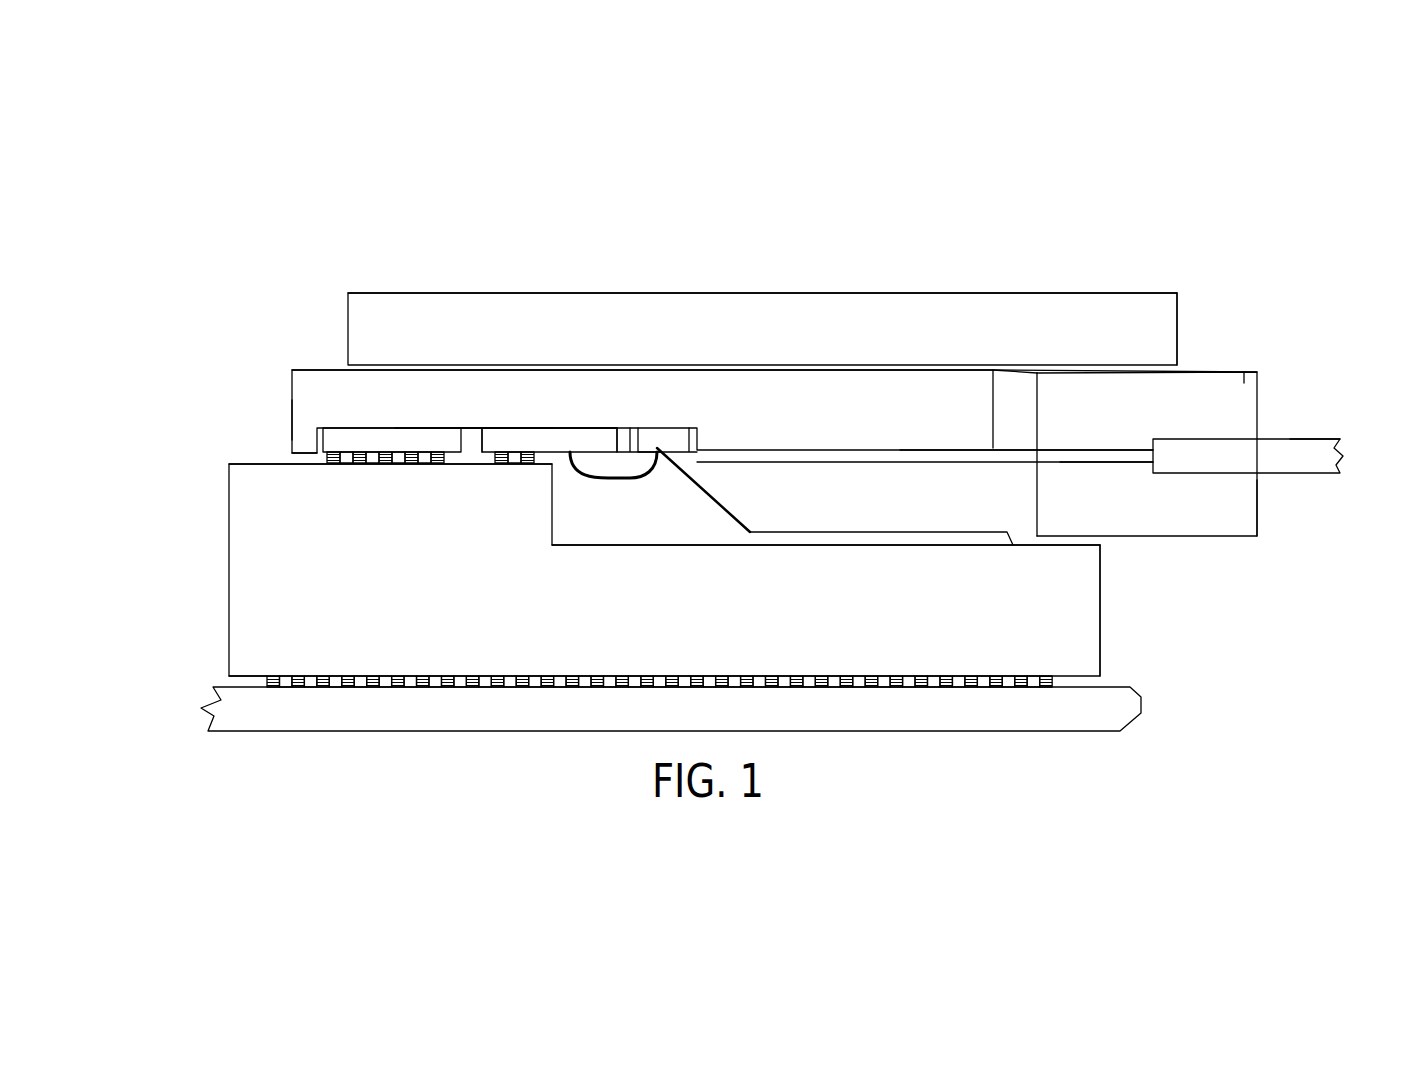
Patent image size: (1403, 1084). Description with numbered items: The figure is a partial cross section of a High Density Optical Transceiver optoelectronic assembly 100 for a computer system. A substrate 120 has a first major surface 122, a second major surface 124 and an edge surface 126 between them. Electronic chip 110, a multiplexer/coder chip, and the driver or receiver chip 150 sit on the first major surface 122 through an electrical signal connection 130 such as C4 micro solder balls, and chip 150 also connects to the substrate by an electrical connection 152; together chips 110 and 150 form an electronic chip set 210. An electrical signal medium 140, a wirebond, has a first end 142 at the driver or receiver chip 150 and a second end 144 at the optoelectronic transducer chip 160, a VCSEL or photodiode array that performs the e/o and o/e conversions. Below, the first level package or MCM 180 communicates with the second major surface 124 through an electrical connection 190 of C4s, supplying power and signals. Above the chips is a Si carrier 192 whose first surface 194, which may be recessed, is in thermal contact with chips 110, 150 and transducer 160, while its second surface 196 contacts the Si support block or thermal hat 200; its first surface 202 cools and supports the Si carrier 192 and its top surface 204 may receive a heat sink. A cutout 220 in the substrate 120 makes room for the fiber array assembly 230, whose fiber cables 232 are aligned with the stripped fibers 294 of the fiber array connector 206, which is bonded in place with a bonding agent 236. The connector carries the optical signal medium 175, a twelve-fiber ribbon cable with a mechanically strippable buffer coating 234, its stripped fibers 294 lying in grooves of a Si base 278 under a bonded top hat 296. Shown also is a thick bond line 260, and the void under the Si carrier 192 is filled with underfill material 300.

The optoelectronic assembly 100 is at (280, 227).
The electronic chip 110 is at (381, 452).
The substrate 120 is at (229, 577).
The first major surface 122 is at (267, 464).
The second major surface 124 is at (230, 687).
The edge surface 126 is at (1100, 609).
The electrical signal connection 130 is at (290, 456).
The electrical signal medium 140 is at (600, 452).
The first end 142 is at (570, 450).
The second end 144 is at (660, 449).
The driver or receiver chip 150 is at (523, 427).
The electrical connection 152 is at (583, 455).
The optoelectronic transducer chip 160 is at (663, 427).
The optical signal medium 175 is at (1318, 437).
The first level package 180 is at (1142, 705).
The electrical connection 190 is at (1057, 684).
The Si carrier 192 is at (291, 381).
The first surface 194 is at (477, 430).
The second surface 196 is at (310, 369).
The Si support block 200 is at (1072, 291).
The first surface 202 is at (1178, 367).
The top surface 204 is at (938, 292).
The fiber array connector 206 is at (1217, 372).
The electronic chip set 210 is at (553, 428).
The cutout 220 is at (632, 500).
The fiber array assembly 230 is at (1007, 497).
The fiber cables 232 is at (922, 452).
The buffer coating 234 is at (1275, 443).
The bonding agent 236 is at (1015, 394).
The bond wire 260 is at (690, 489).
The Si base 278 is at (1243, 513).
The stripped fibers 294 is at (1107, 452).
The top hat 296 is at (1244, 382).
The underfill material 300 is at (287, 422).